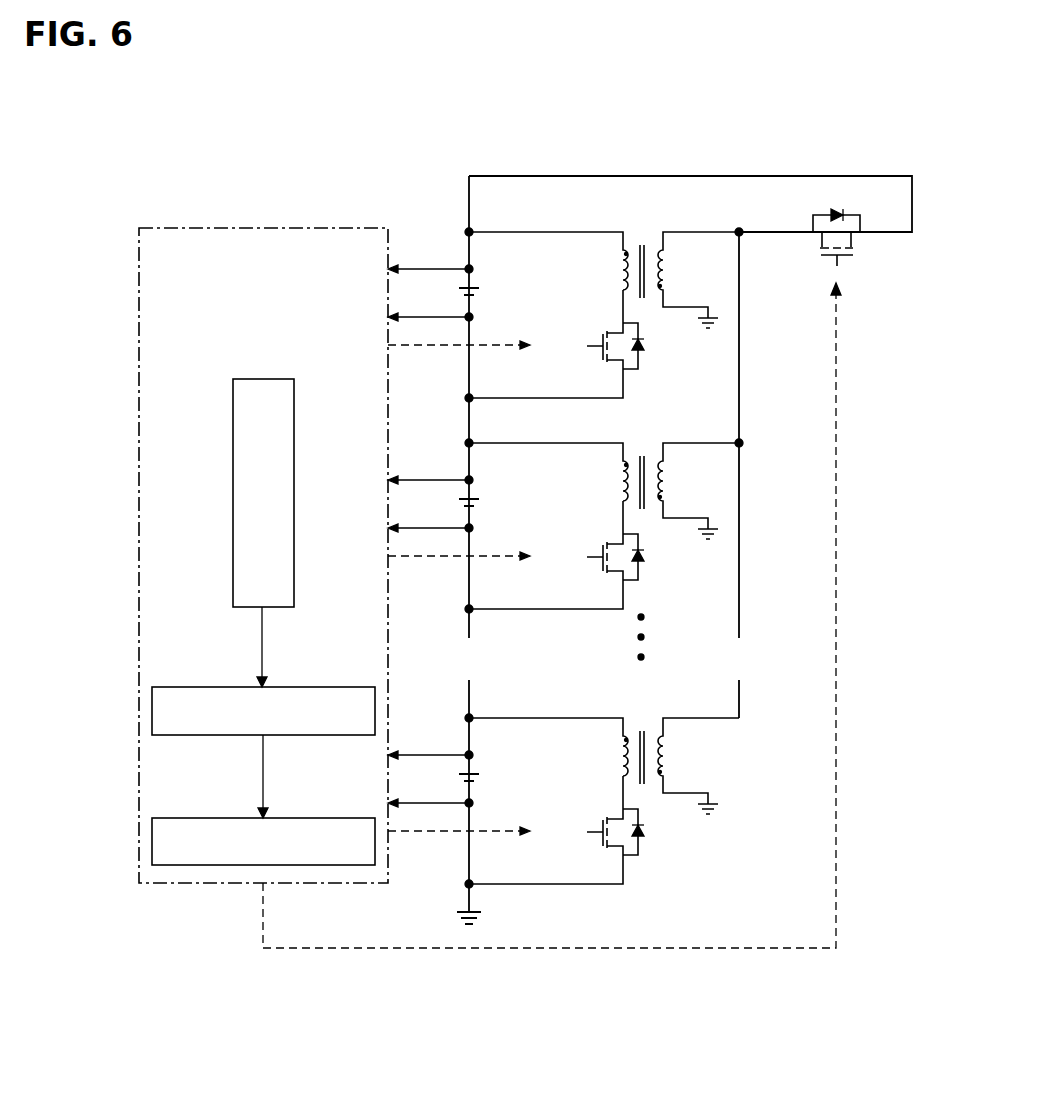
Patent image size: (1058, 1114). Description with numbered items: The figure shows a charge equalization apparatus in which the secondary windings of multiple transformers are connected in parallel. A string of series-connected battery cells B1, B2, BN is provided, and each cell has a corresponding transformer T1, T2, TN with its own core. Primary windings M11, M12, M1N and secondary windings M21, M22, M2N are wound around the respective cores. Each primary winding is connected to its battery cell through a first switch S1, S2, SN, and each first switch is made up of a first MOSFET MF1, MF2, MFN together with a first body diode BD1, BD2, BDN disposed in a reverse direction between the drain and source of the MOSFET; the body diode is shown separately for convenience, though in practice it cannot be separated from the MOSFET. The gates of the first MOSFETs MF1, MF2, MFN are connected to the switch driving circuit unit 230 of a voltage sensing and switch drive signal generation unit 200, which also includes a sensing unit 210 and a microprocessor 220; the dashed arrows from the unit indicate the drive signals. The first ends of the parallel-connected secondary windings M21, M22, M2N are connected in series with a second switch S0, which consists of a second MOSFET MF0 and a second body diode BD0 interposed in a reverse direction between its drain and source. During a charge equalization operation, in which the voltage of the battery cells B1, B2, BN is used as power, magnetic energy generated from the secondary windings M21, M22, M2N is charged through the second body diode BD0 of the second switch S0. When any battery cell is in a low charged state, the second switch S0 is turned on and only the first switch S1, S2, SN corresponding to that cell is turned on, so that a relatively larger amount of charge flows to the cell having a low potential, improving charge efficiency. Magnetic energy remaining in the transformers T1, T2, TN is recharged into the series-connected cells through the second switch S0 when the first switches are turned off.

The voltage sensing and switch drive signal generation unit 200 is at (266, 228).
The sensing unit 210 is at (233, 497).
The microprocessor 220 is at (152, 712).
The switch driving circuit unit 230 is at (152, 843).
The battery cell B1 is at (451, 295).
The battery cell B2 is at (451, 506).
The battery cell BN is at (451, 781).
The transformer T1 is at (640, 242).
The transformer T2 is at (640, 453).
The transformer TN is at (640, 728).
The primary winding M11 is at (548, 261).
The secondary winding M21 is at (698, 280).
The primary winding M12 is at (548, 472).
The secondary winding M22 is at (698, 491).
The primary winding M1N is at (548, 747).
The secondary winding M2N is at (698, 766).
The first switch S1 is at (573, 344).
The first switch S2 is at (573, 555).
The first switch SN is at (574, 830).
The second switch S0 is at (836, 214).
The first MOSFET MF1 is at (597, 349).
The first MOSFET MF2 is at (570, 573).
The first MOSFET MFN is at (569, 848).
The second MOSFET MF0 is at (840, 258).
The first body diode BD1 is at (642, 353).
The first body diode BD2 is at (662, 577).
The first body diode BDN is at (663, 852).
The second body diode BD0 is at (833, 212).